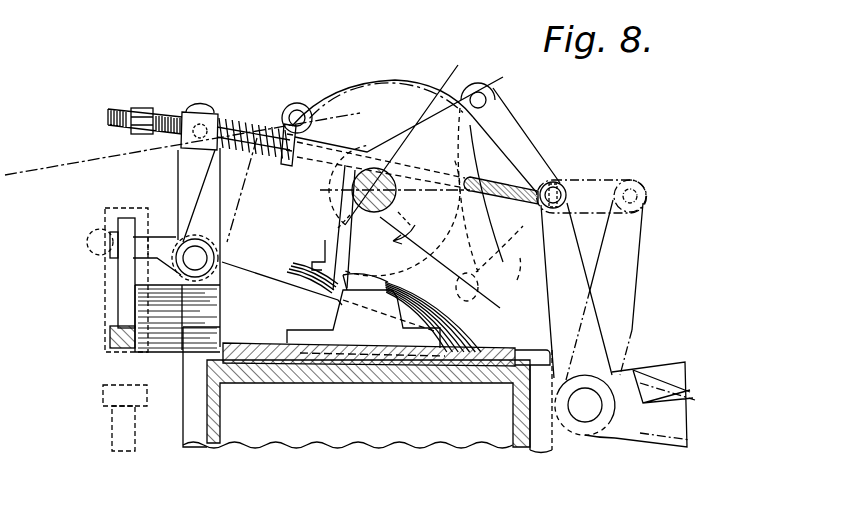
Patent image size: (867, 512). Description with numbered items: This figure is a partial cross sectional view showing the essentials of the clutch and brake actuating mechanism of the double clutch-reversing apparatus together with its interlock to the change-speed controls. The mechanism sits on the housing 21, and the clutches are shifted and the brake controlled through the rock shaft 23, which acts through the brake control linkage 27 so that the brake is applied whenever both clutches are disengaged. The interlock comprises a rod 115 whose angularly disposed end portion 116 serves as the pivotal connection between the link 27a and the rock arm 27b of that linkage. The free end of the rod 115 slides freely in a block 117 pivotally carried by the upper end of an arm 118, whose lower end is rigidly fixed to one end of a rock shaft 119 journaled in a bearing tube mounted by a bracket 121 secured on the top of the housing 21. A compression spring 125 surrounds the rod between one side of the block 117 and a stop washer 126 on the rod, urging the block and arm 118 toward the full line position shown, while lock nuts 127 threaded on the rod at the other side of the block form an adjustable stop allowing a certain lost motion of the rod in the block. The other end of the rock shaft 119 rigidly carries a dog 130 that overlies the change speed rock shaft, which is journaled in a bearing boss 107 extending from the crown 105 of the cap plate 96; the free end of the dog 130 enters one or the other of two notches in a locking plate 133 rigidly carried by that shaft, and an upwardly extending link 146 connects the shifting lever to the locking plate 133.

The housing 21 is at (222, 411).
The rock shaft 23 is at (371, 212).
The brake control linkage 27 is at (420, 123).
The link 27a is at (528, 138).
The rock arm 27b is at (633, 307).
The cap plate 96 is at (530, 352).
The crown 105 is at (445, 316).
The bearing boss 107 is at (216, 312).
The rod 115 is at (484, 194).
The angularly disposed end portion 116 is at (558, 191).
The block 117 is at (199, 120).
The arm 118 is at (178, 165).
The rock shaft 119 is at (200, 256).
The bracket 121 is at (268, 279).
The compression spring 125 is at (246, 132).
The stop washer 126 is at (291, 160).
The lock nuts 127 is at (142, 115).
The dog 130 is at (158, 236).
The locking plate 133 is at (123, 270).
The link 146 is at (112, 433).